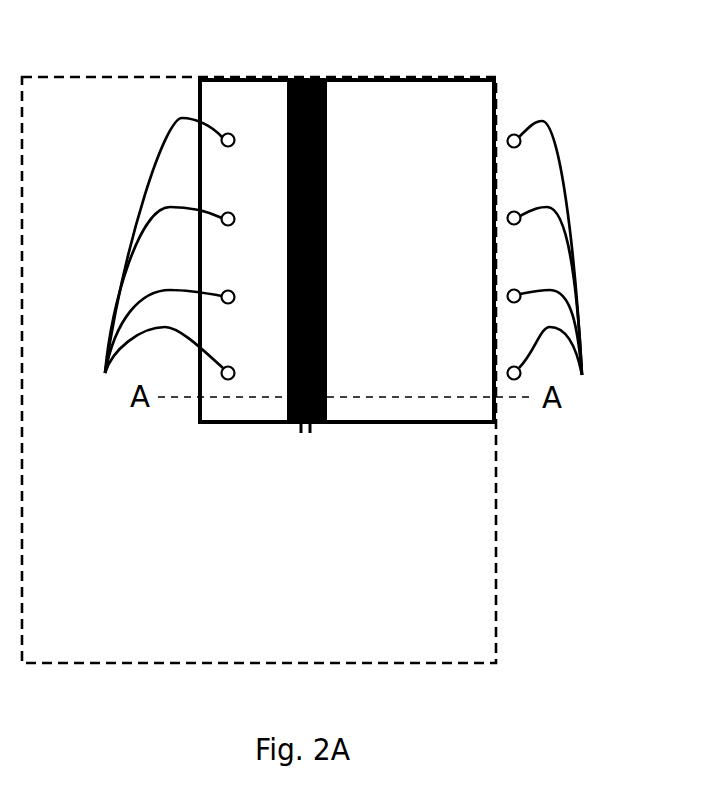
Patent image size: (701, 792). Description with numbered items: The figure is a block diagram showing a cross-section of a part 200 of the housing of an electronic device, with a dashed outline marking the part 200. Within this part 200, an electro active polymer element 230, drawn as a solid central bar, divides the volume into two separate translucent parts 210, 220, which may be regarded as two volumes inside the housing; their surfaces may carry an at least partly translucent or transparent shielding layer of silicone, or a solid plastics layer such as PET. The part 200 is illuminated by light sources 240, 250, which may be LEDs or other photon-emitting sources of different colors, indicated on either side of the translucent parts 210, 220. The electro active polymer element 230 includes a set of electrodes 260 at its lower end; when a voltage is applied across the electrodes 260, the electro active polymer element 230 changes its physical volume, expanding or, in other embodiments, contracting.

The part of housing 200 is at (496, 657).
The first translucent part 210 is at (243, 107).
The second translucent part 220 is at (447, 115).
The electro active polymer element 230 is at (307, 80).
The light source 240 is at (139, 267).
The light source 250 is at (574, 268).
The set of electrodes 260 is at (313, 427).